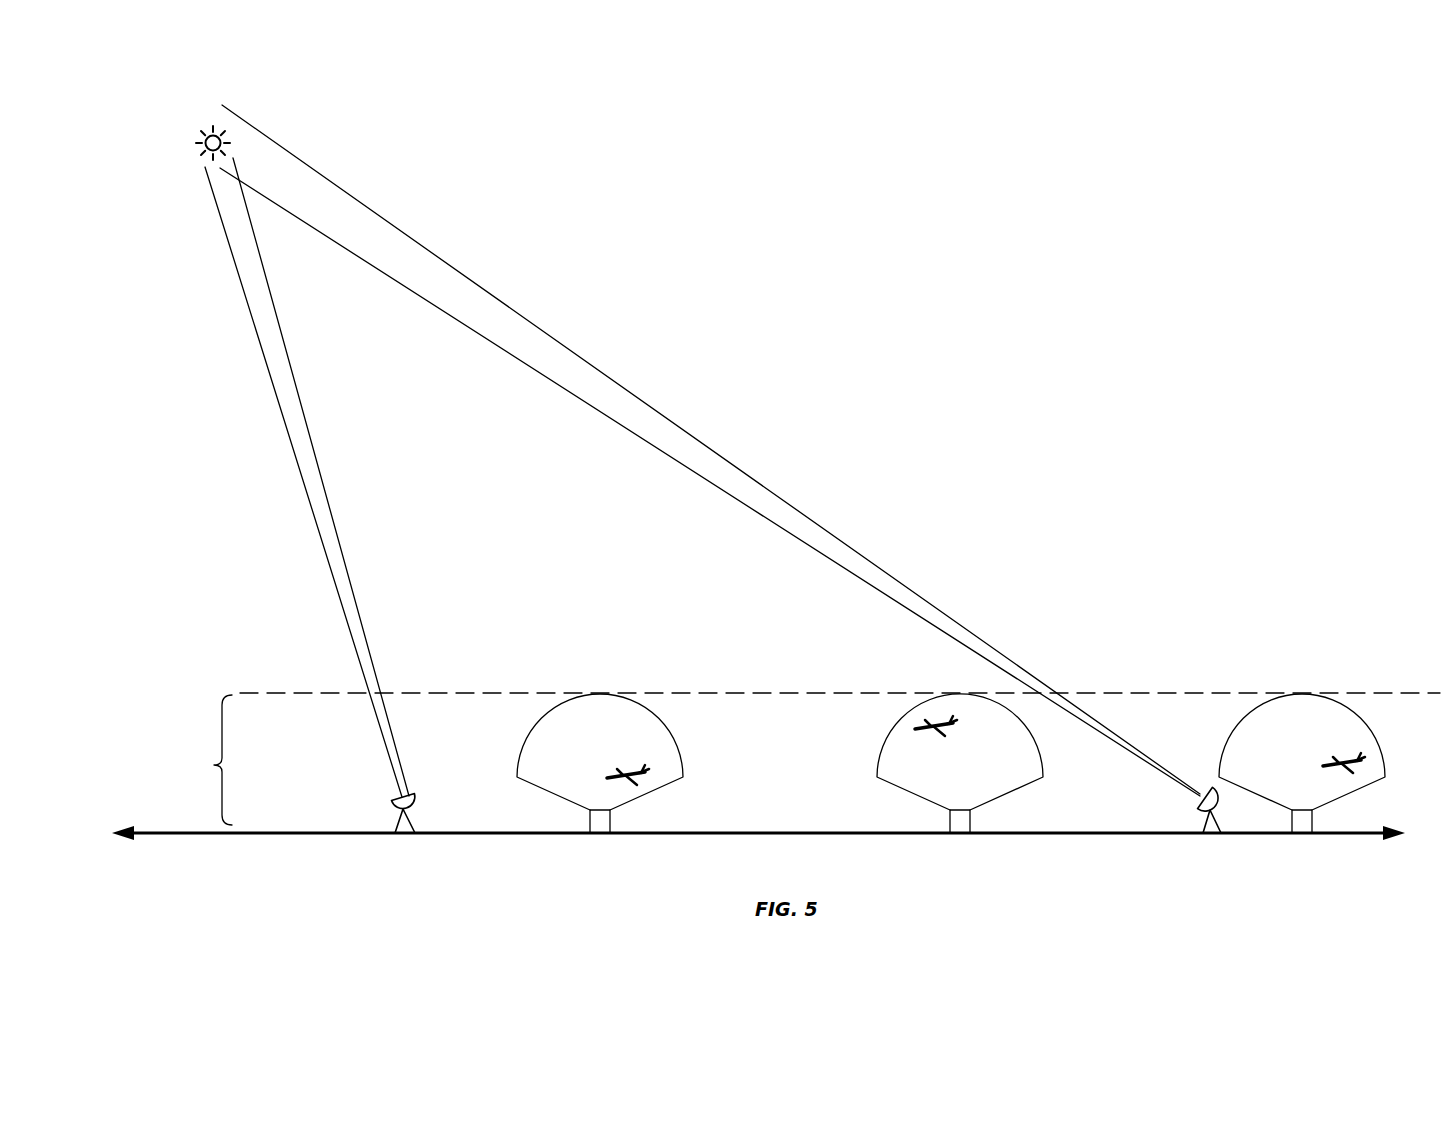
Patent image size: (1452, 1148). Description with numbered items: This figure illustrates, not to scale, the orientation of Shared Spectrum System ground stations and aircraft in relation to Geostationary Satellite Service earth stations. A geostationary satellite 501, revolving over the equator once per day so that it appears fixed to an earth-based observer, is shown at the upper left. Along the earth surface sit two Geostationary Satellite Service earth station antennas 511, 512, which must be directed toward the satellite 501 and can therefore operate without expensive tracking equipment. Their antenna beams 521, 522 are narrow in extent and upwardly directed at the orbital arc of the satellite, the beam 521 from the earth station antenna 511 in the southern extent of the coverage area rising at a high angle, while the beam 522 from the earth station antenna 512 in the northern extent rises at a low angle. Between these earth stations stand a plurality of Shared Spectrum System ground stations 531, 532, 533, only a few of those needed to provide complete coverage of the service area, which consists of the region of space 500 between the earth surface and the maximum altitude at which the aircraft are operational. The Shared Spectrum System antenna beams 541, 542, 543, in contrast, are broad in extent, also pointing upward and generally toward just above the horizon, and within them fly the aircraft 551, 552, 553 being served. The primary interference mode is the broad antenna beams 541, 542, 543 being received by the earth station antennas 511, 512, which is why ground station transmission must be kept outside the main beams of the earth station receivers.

The region of space 500 is at (806, 759).
The geostationary satellite 501 is at (236, 129).
The earth station antenna 511 is at (380, 803).
The earth station antenna 512 is at (1200, 775).
The antenna beam 521 is at (312, 452).
The antenna beam 522 is at (733, 465).
The Shared Spectrum System ground station 531 is at (610, 827).
The Shared Spectrum System ground station 532 is at (970, 826).
The Shared Spectrum System ground station 533 is at (1312, 826).
The Shared Spectrum System antenna beam 541 is at (683, 762).
The Shared Spectrum System antenna beam 542 is at (1044, 748).
The Shared Spectrum System antenna beam 543 is at (1372, 738).
The aircraft 551 is at (633, 768).
The aircraft 552 is at (925, 727).
The aircraft 553 is at (1356, 755).